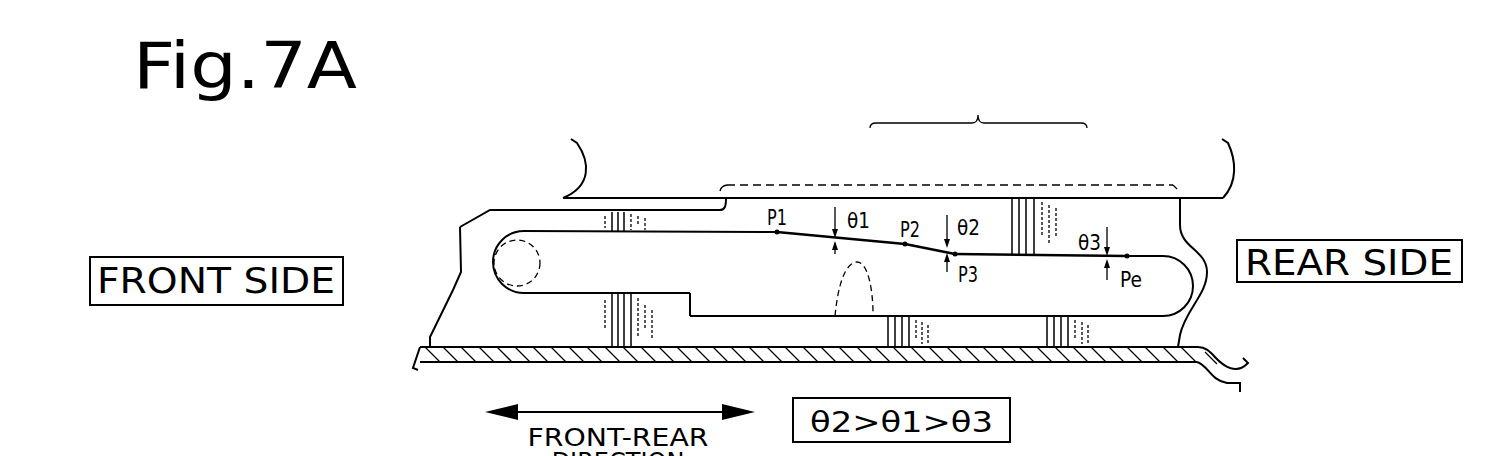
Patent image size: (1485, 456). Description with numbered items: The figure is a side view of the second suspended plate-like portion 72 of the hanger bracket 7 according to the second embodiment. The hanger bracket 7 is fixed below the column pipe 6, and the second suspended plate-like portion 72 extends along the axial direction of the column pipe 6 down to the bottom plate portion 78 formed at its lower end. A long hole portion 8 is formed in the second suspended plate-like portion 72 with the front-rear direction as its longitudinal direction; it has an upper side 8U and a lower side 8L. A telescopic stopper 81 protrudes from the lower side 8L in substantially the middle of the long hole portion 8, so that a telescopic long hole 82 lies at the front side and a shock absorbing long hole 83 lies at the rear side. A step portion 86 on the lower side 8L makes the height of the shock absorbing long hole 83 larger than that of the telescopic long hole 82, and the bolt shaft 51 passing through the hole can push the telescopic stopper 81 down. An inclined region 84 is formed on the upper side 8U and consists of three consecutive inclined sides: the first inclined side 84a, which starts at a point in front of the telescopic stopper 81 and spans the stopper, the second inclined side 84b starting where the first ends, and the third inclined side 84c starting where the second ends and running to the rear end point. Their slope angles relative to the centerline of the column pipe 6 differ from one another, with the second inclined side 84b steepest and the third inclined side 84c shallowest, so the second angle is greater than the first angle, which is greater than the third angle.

The hanger bracket 7 is at (440, 239).
The column pipe 6 is at (1213, 170).
The second suspended plate-like portion 72 is at (1198, 297).
The bottom plate portion 78 is at (1147, 362).
The long hole portion 8 is at (599, 272).
The telescopic long hole 82 is at (563, 265).
The upper side 8U is at (666, 236).
The lower side 8L is at (1002, 316).
The step portion 86 is at (704, 304).
The inclined region 84 is at (952, 188).
The first inclined side 84a is at (870, 243).
The second inclined side 84b is at (936, 248).
The third inclined side 84c is at (1048, 258).
The bolt shaft 51 is at (525, 245).
The telescopic stopper 81 is at (840, 284).
The shock absorbing long hole 83 is at (1097, 303).